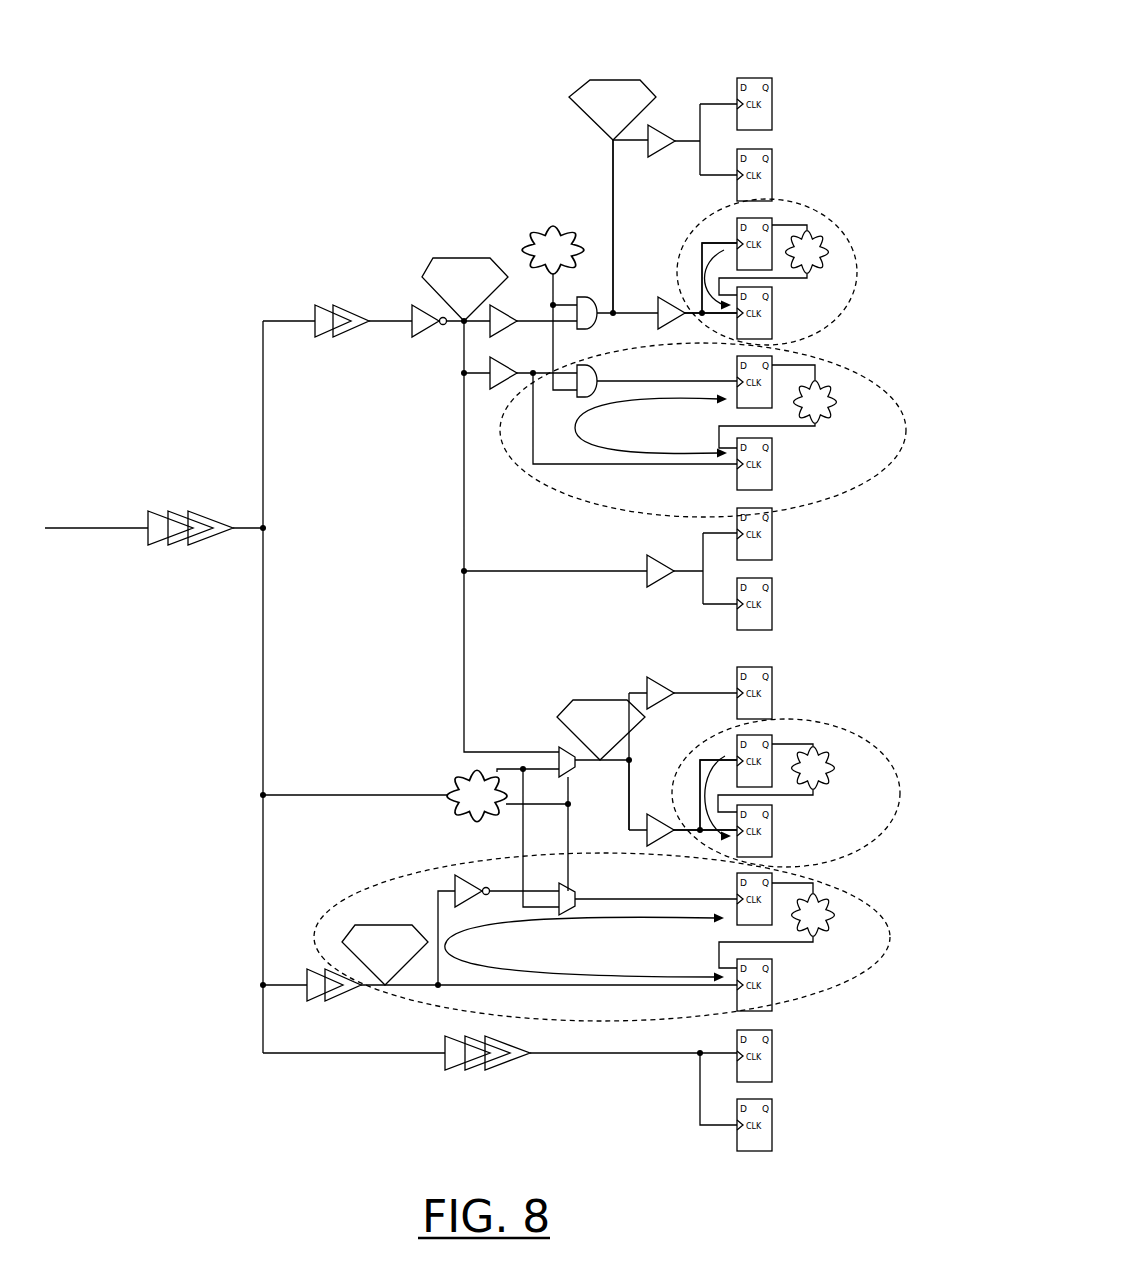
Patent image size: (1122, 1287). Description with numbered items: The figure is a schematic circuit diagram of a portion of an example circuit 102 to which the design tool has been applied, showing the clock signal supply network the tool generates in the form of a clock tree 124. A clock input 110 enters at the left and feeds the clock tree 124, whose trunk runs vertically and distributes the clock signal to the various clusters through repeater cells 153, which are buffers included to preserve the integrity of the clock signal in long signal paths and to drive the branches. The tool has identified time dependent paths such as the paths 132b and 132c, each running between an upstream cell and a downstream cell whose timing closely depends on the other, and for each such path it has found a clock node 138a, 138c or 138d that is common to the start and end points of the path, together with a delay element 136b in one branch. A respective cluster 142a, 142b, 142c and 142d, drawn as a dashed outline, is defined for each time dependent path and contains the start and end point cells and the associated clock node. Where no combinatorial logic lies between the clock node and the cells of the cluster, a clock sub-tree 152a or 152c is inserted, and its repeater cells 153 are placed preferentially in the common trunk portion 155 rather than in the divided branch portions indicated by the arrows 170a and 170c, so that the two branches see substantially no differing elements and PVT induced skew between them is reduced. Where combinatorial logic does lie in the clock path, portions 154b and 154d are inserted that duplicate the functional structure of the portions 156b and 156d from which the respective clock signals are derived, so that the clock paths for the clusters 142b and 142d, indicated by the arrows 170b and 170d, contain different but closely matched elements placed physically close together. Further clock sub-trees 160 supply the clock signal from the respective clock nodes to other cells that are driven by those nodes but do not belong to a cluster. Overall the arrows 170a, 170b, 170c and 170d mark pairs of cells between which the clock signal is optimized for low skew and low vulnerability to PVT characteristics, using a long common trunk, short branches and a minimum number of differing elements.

The circuit 102 is at (198, 108).
The clock input 110 is at (109, 522).
The clock tree 124 is at (263, 366).
The repeater cell 153 is at (196, 500).
The common portion 155 is at (622, 313).
The delay element with inverter 136b is at (448, 263).
The clock node 138a is at (600, 85).
The clock node 138c is at (590, 700).
The clock node 138d is at (378, 932).
The cluster 142a is at (790, 261).
The cluster 142b is at (730, 409).
The cluster 142c is at (792, 778).
The cluster 142d is at (636, 937).
The clock sub-tree 152a is at (671, 272).
The clock sub-tree 152c is at (650, 804).
The duplicating portion 154b is at (630, 372).
The duplicating portion 154d is at (560, 906).
The functional structure portion 156b is at (597, 297).
The functional structure portion 156d is at (559, 750).
The time dependent path 132b is at (830, 355).
The time dependent path 132c is at (815, 795).
The further clock sub-tree 160 is at (684, 86).
The arrow 170a is at (724, 250).
The arrow 170b is at (672, 452).
The arrow 170c is at (725, 755).
The arrow 170d is at (598, 963).